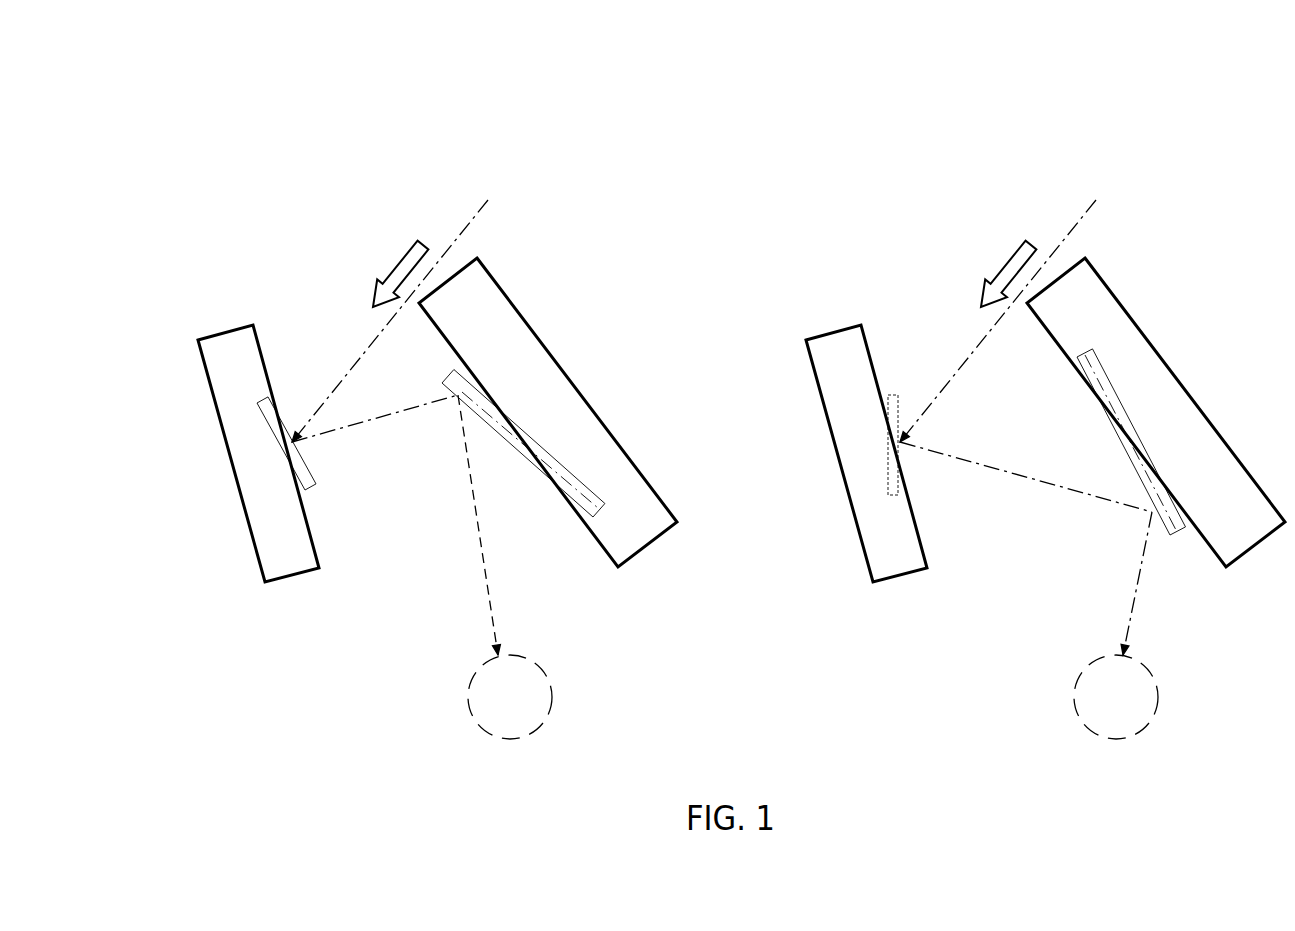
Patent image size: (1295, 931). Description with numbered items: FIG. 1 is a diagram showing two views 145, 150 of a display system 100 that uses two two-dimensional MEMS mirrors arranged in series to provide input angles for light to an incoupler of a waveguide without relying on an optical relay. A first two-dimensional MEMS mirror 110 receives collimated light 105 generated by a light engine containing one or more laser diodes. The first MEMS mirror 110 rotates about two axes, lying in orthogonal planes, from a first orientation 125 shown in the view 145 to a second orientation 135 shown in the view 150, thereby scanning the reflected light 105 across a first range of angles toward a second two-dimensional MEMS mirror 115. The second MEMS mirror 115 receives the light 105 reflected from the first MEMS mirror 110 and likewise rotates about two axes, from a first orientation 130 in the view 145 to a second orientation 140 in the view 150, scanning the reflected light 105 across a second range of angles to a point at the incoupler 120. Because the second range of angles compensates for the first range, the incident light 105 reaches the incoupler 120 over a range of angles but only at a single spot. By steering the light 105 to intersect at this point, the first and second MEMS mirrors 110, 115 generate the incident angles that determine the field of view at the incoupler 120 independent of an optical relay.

The display system 100 is at (650, 96).
The collimated light 105 is at (483, 568).
The first 2-D MEMS mirror 110 is at (225, 332).
The second 2-D MEMS mirror 115 is at (578, 388).
The incoupler 120 is at (472, 718).
The first orientation of first 2-D MEMS mirror 125 is at (313, 487).
The first orientation of second 2-D MEMS mirror 130 is at (515, 450).
The second orientation of first 2-D MEMS mirror 135 is at (893, 395).
The second orientation of second 2-D MEMS mirror 140 is at (1183, 530).
The first view 145 is at (297, 192).
The second view 150 is at (1218, 192).